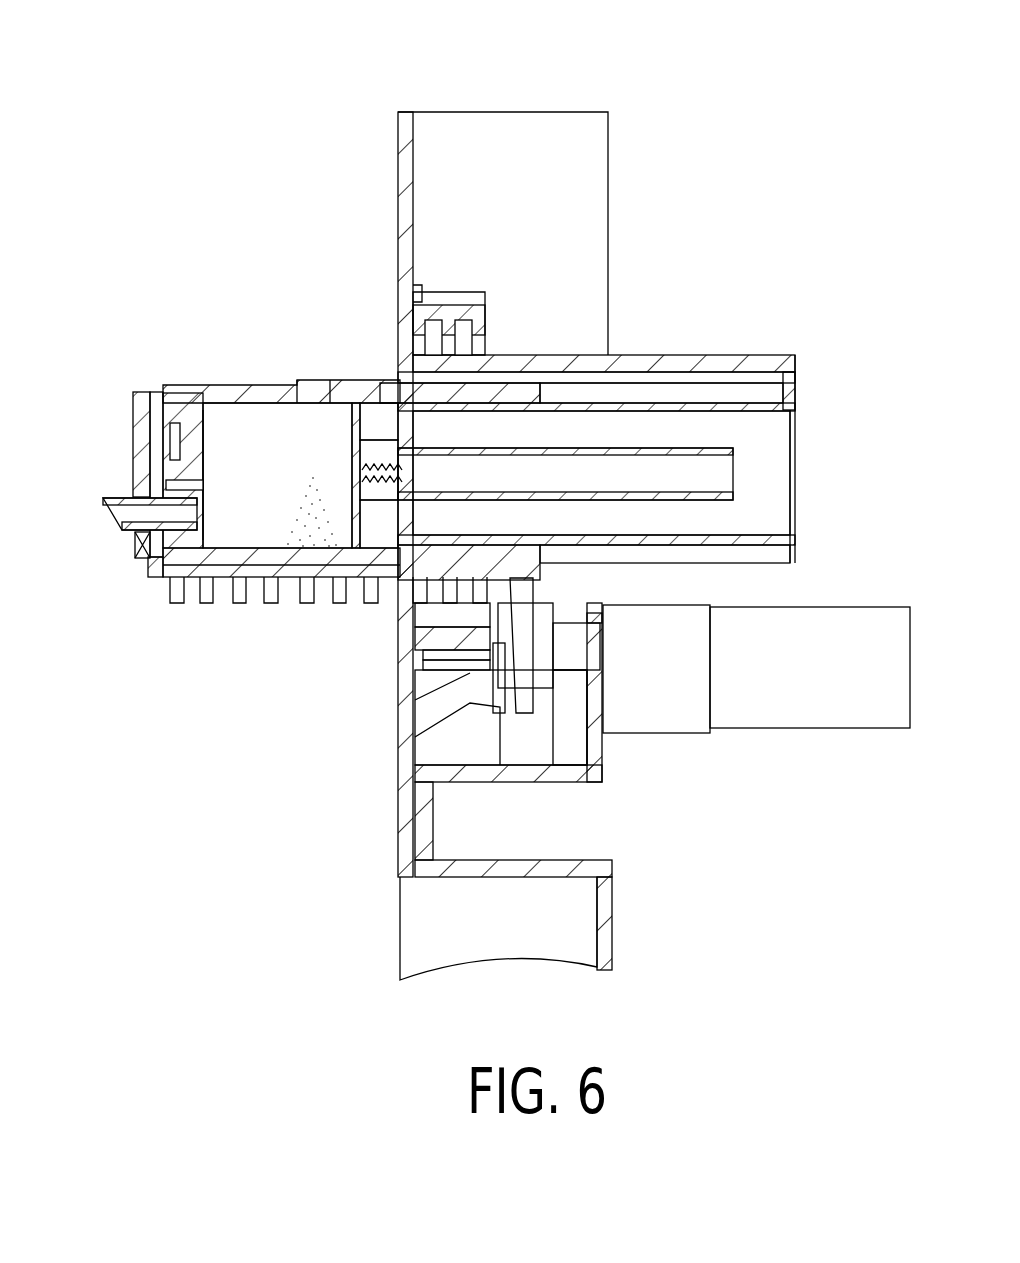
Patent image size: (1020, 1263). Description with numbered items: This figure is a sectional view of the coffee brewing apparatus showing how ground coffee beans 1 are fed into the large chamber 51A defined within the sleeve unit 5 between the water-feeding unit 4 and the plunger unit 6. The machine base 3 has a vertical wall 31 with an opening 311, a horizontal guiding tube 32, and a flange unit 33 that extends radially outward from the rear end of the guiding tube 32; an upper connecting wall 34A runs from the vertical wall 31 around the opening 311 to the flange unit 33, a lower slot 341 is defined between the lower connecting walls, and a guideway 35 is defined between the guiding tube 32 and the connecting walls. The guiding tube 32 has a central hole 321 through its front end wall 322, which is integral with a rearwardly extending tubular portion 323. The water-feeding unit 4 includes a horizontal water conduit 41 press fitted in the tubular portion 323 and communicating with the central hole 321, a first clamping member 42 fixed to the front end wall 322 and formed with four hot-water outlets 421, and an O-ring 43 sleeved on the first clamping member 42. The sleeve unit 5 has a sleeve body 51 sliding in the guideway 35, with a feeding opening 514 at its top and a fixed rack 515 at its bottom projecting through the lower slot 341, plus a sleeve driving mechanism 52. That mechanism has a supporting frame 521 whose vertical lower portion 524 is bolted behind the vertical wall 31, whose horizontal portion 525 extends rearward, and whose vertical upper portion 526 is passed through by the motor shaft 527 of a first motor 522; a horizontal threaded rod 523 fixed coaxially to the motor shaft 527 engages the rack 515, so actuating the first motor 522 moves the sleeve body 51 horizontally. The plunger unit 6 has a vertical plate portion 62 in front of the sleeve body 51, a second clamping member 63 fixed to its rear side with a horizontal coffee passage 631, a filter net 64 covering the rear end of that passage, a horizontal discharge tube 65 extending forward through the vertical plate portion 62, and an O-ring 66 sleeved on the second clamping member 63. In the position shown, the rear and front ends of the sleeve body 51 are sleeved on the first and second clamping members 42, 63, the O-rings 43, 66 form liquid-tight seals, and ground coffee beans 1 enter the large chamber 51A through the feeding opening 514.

The ground coffee beans 1 is at (295, 523).
The machine base 3 is at (467, 104).
The vertical wall 31 is at (405, 185).
The opening 311 is at (400, 365).
The horizontal guiding tube 32 is at (740, 408).
The flange unit 33 is at (792, 388).
The upper connecting wall 34A is at (697, 363).
The lower slot 341 is at (667, 545).
The guideway 35 is at (627, 363).
The water-feeding unit 4 is at (373, 380).
The horizontal water conduit 41 is at (707, 452).
The first clamping member 42 is at (330, 428).
The O-ring 43 is at (370, 403).
The hot-water outlets 421 is at (332, 545).
The sleeve unit 5 is at (214, 378).
The sleeve body 51 is at (197, 385).
The large chamber 51A is at (268, 415).
The feeding opening 514 is at (313, 388).
The fixed rack 515 is at (417, 717).
The plunger unit 6 is at (125, 402).
The vertical plate portion 62 is at (133, 445).
The second clamping member 63 is at (161, 548).
The coffee passage 631 is at (160, 548).
The filter net 64 is at (207, 520).
The horizontal discharge tube 65 is at (114, 505).
The O-ring 66 is at (183, 560).
The central hole 321 is at (352, 547).
The front end wall 322 is at (405, 548).
The tubular portion 323 is at (371, 548).
The sleeve driving mechanism 52 is at (837, 733).
The supporting frame 521 is at (570, 780).
The first motor 522 is at (873, 683).
The horizontal threaded rod 523 is at (543, 678).
The vertical lower portion 524 is at (543, 773).
The horizontal portion 525 is at (545, 772).
The vertical upper portion 526 is at (595, 700).
The motor shaft 527 is at (580, 645).